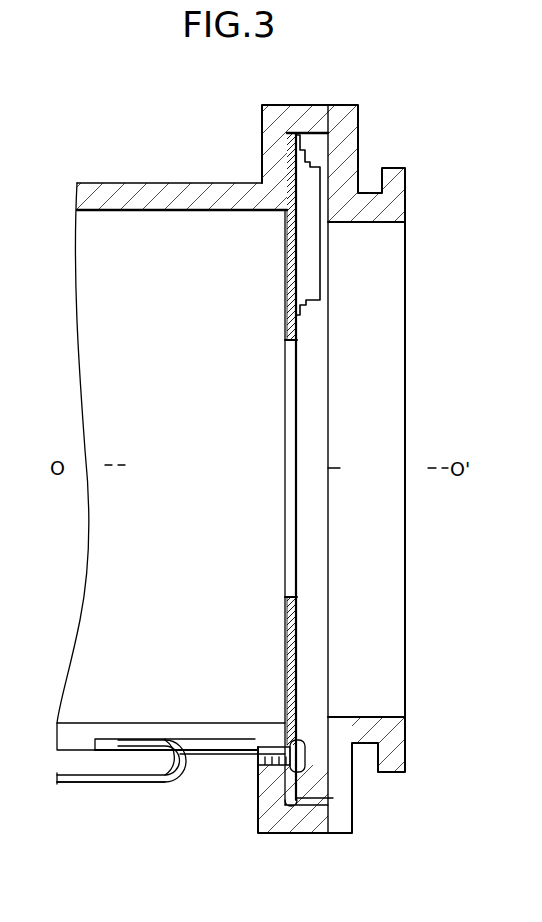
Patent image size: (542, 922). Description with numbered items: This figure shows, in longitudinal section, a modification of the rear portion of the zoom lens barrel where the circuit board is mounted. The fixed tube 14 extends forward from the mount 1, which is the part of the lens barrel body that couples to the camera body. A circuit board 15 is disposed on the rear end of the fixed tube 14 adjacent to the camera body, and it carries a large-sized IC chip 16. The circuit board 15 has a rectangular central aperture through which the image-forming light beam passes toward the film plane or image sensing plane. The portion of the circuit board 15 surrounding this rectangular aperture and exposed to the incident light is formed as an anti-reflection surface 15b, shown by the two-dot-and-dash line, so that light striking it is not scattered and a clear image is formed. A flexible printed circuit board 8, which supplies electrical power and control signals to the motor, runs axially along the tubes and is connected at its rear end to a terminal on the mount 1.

The mount 1 is at (357, 146).
The fixed tube 14 is at (172, 188).
The circuit board 15 is at (297, 131).
The anti-reflection surface 15b is at (283, 272).
The IC chip 16 is at (312, 172).
The flexible printed circuit board 8 is at (160, 784).